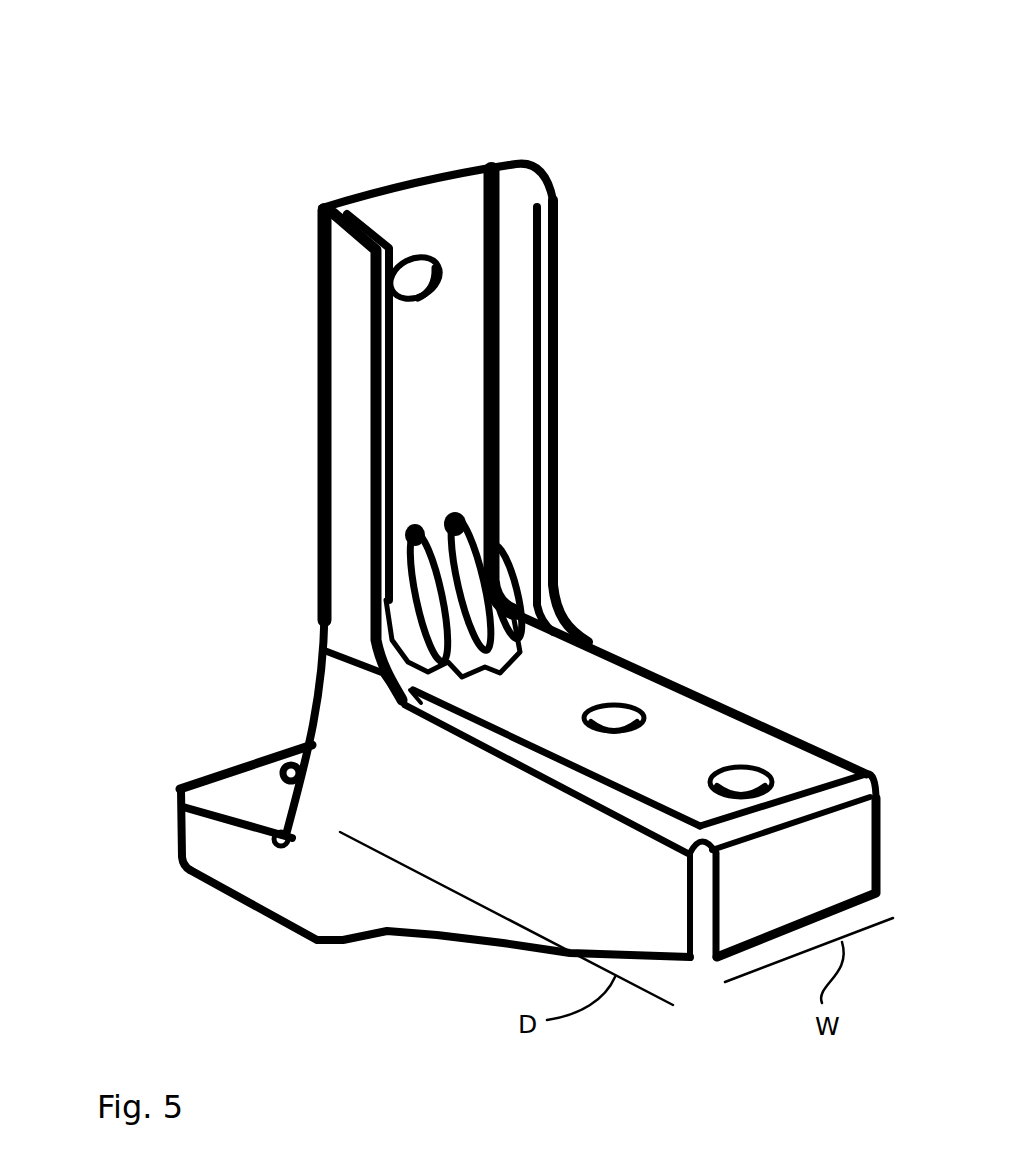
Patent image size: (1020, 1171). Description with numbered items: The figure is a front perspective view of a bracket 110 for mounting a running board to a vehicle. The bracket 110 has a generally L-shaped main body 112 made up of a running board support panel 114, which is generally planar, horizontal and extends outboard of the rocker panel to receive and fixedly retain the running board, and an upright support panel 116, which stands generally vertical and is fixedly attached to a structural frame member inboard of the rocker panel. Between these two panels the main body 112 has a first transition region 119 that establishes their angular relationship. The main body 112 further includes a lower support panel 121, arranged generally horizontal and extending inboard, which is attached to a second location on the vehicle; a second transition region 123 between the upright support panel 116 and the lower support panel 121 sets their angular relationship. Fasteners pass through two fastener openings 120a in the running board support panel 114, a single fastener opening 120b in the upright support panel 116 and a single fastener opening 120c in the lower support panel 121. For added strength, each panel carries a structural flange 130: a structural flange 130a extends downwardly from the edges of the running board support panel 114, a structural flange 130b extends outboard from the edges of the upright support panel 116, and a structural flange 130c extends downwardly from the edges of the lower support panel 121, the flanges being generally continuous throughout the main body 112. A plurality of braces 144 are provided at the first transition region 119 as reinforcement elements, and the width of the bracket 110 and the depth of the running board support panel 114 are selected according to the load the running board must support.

The bracket 110 is at (241, 147).
The main body 112 is at (603, 647).
The running board support panel 114 is at (725, 727).
The upright support panel 116 is at (449, 208).
The first transition region 119 is at (398, 637).
The fastener openings 120a is at (627, 703).
The fastener opening 120b is at (447, 267).
The fastener opening 120c is at (302, 747).
The lower support panel 121 is at (258, 787).
The second transition region 123 is at (277, 832).
The structural flange 130 is at (520, 548).
The structural flange 130a is at (445, 806).
The structural flange 130b is at (350, 428).
The structural flange 130c is at (240, 877).
The braces 144 is at (422, 570).